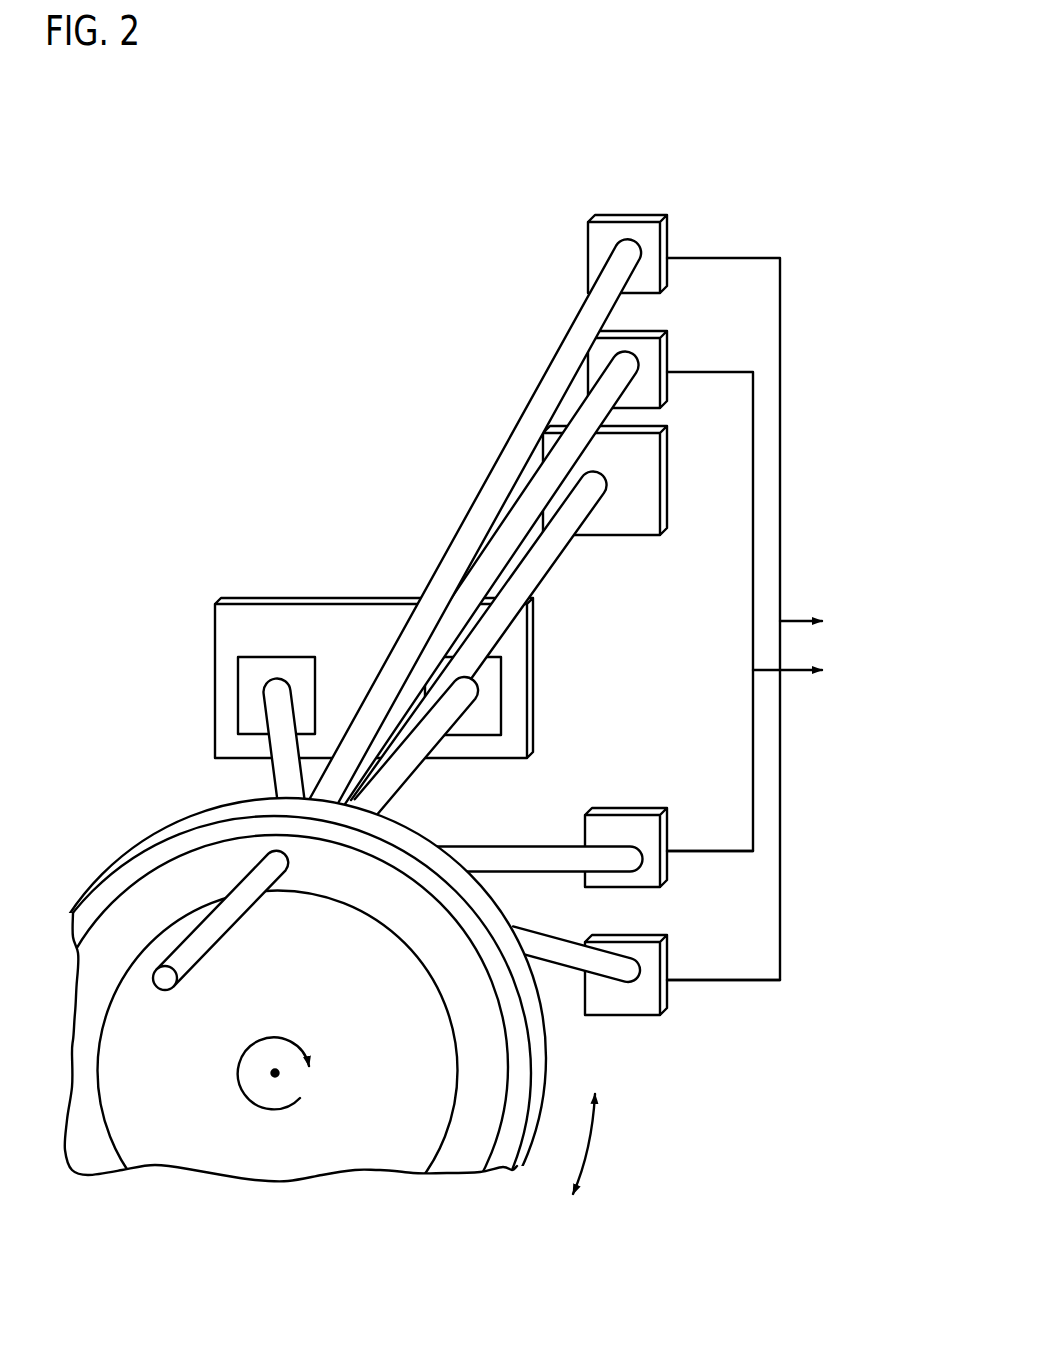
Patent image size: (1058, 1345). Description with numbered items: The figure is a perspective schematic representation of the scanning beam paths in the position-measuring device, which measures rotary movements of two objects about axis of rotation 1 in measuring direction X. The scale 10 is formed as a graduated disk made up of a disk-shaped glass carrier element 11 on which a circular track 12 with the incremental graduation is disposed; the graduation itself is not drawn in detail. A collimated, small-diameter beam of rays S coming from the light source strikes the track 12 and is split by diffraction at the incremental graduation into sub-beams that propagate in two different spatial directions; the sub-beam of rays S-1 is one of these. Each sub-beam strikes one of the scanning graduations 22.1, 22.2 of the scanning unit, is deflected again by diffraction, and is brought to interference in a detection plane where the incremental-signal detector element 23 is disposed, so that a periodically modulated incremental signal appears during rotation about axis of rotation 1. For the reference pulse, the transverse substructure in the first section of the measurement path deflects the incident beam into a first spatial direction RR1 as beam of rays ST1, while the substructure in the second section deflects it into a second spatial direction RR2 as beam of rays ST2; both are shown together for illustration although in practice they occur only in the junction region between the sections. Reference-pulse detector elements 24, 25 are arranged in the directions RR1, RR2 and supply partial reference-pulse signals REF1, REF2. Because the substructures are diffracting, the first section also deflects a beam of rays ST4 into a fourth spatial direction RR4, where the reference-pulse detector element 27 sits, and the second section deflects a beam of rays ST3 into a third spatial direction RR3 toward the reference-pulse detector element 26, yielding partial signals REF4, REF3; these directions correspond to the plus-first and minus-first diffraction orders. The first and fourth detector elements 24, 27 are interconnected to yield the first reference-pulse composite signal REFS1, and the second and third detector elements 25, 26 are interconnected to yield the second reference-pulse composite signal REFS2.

The axis of rotation 1 is at (277, 1075).
The scale 10 is at (377, 1178).
The carrier element 11 is at (145, 1130).
The track 12 is at (472, 1140).
The beam of rays S is at (197, 950).
The sub-beam of rays S-1 is at (270, 748).
The scanning graduation 22.1 is at (247, 678).
The scanning graduation 22.2 is at (483, 673).
The incremental-signal detector element 23 is at (640, 520).
The first reference-pulse detector element 24 is at (648, 270).
The second reference-pulse detector element 25 is at (648, 384).
The third reference-pulse detector element 26 is at (640, 832).
The fourth reference-pulse detector element 27 is at (643, 995).
The first spatial direction RR1 is at (666, 249).
The second spatial direction RR2 is at (666, 363).
The third spatial direction RR3 is at (652, 818).
The fourth spatial direction RR4 is at (662, 983).
The beam of rays deflected into first spatial direction ST1 is at (502, 482).
The beam of rays deflected into second spatial direction ST2 is at (585, 423).
The beam of rays deflected into third spatial direction ST3 is at (487, 857).
The beam of rays deflected into fourth spatial direction ST4 is at (543, 955).
The partial reference-pulse signal REF1 is at (723, 598).
The partial reference-pulse signal REF2 is at (710, 592).
The reference signal 3 REF3 is at (710, 833).
The reference signal 4 REF4 is at (723, 962).
The first reference-pulse composite signal REFS1 is at (848, 624).
The second reference-pulse composite signal REFS2 is at (834, 674).
The measuring direction X is at (596, 1144).